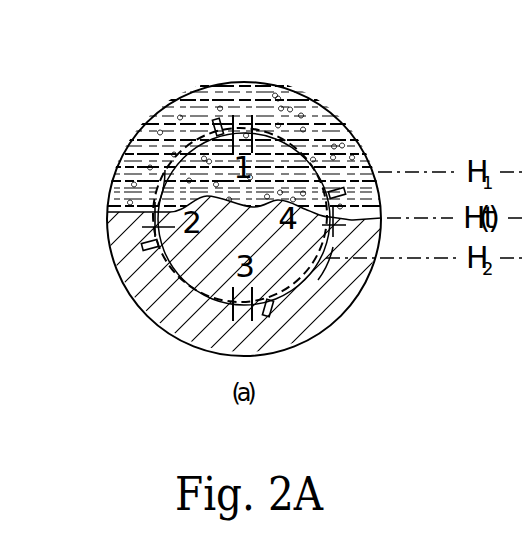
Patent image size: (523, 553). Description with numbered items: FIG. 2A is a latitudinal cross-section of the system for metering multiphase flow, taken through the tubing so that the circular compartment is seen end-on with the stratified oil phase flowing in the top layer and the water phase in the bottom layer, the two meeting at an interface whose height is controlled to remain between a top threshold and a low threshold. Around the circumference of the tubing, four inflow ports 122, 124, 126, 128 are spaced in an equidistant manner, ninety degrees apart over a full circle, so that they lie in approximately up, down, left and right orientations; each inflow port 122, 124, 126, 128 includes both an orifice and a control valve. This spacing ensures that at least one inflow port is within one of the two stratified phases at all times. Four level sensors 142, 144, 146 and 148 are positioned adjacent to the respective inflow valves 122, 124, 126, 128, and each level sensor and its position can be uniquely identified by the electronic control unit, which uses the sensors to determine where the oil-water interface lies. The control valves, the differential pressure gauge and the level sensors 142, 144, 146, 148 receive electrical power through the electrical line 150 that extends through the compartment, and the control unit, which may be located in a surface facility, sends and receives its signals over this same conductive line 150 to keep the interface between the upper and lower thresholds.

The inflow port 122 is at (237, 312).
The inflow port 124 is at (242, 116).
The inflow port 126 is at (158, 203).
The inflow port 128 is at (333, 247).
The level sensor 142 is at (278, 313).
The level sensor 144 is at (206, 130).
The level sensor 146 is at (147, 240).
The level sensor 148 is at (333, 205).
The electrical line 150 is at (298, 139).